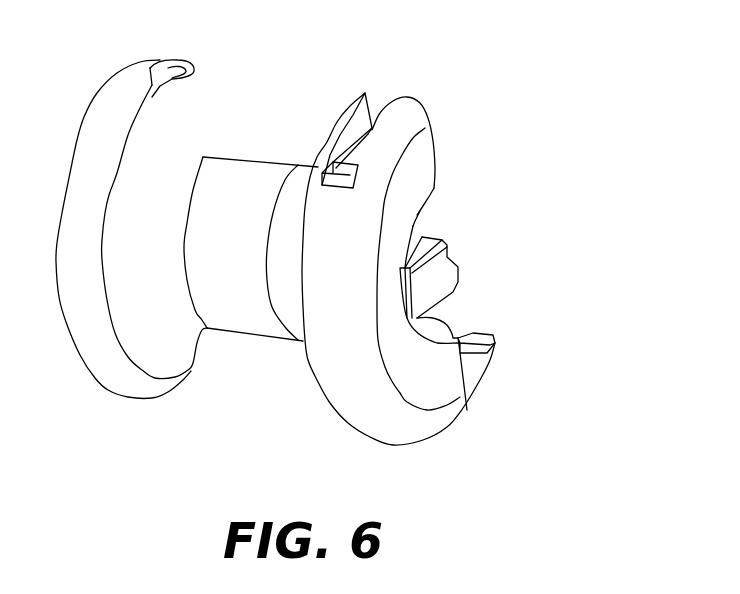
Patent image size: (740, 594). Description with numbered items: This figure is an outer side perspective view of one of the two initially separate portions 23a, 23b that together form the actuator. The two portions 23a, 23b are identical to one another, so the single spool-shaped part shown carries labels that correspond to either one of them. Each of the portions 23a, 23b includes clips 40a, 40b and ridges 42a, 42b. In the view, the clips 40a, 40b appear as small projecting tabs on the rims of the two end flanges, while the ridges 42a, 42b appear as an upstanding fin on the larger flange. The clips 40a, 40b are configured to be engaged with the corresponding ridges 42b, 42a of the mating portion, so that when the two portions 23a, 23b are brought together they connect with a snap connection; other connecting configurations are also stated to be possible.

The portion 23a is at (126, 284).
The portion 23b is at (138, 337).
The clip 40a is at (388, 212).
The clip 40b is at (175, 64).
The ridge 42a is at (460, 114).
The ridge 42b is at (371, 117).